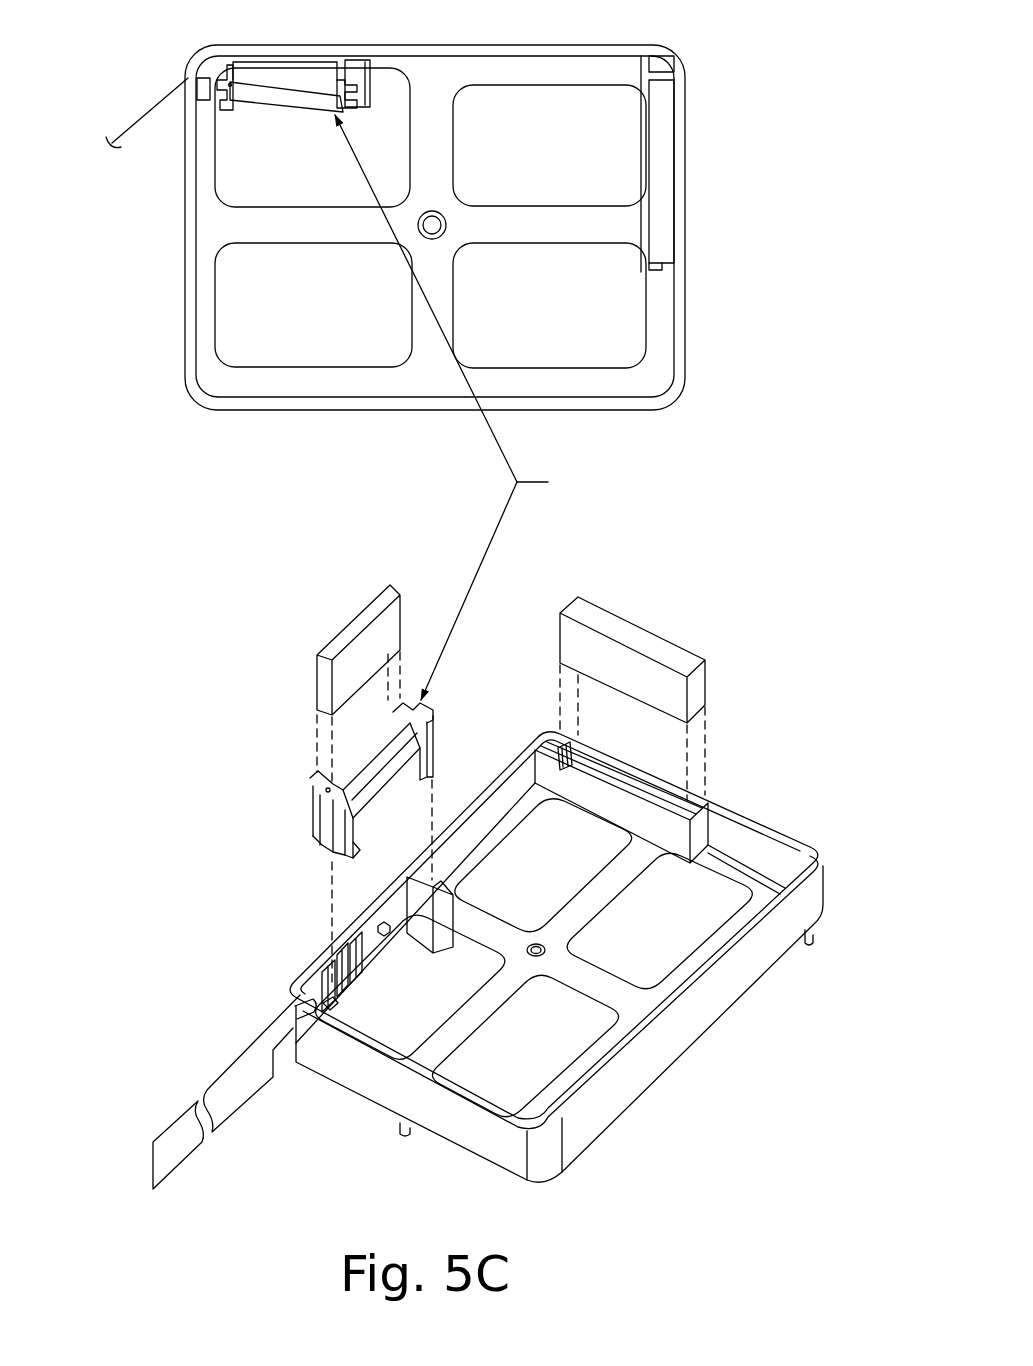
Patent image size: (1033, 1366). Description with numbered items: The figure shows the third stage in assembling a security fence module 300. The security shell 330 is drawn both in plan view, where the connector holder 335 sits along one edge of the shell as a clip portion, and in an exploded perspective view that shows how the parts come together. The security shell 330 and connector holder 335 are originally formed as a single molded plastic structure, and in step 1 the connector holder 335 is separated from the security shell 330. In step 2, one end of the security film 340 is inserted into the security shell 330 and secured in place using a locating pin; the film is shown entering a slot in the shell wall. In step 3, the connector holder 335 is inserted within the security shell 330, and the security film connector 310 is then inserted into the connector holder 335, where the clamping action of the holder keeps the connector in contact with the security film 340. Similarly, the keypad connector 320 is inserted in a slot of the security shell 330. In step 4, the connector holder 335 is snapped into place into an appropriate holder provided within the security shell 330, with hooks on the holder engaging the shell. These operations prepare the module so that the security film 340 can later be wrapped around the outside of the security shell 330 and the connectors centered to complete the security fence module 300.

The security fence module 300 is at (655, 44).
The security shell 330 is at (683, 361).
The connector holder 335 is at (437, 733).
The security film connector 310 is at (360, 612).
The keypad connector 320 is at (673, 643).
The security film 340 is at (217, 1077).
The step 1 is at (692, 1025).
The step 2 is at (247, 1043).
The step 3 is at (314, 682).
The step 4 is at (632, 616).